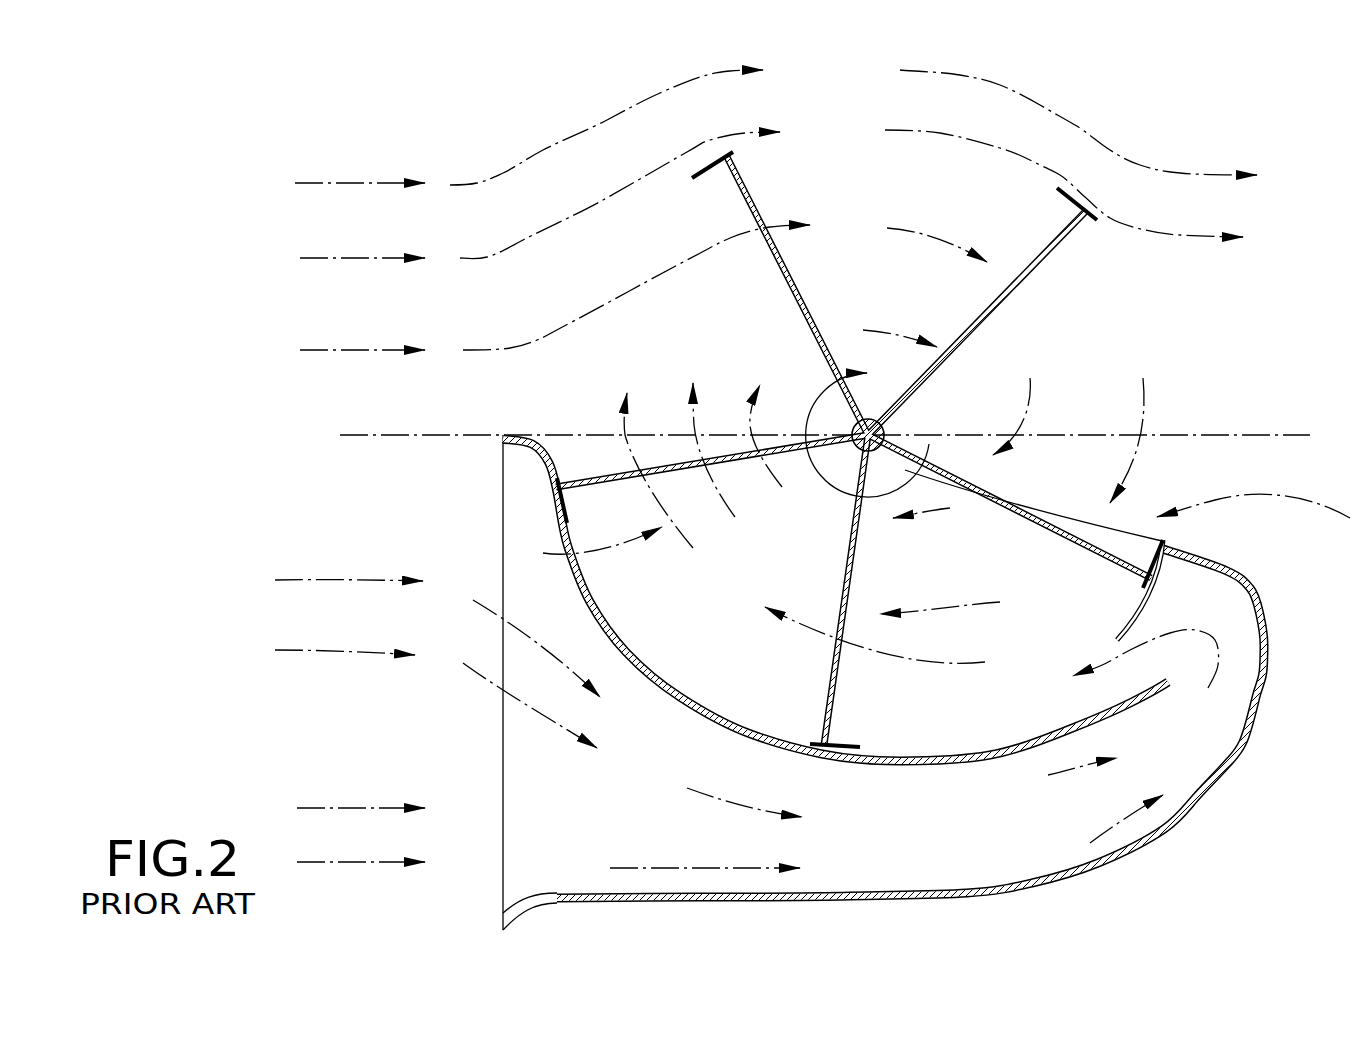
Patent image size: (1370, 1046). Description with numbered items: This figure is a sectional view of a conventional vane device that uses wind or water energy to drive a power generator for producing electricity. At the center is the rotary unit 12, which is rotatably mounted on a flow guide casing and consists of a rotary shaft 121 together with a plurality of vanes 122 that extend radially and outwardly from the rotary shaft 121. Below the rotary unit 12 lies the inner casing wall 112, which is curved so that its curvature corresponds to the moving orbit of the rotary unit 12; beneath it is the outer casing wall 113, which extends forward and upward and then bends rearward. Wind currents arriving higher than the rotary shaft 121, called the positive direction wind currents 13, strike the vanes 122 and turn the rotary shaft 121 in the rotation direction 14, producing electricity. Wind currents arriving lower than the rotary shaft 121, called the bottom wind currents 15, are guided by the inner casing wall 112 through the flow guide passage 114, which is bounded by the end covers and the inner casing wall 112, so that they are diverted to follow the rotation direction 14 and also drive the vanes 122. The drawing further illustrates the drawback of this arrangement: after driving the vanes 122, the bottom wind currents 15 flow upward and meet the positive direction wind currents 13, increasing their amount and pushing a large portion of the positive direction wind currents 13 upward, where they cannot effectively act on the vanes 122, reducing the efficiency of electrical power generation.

The rotary unit 12 is at (866, 449).
The rotary shaft 121 is at (872, 431).
The vanes 122 is at (793, 284).
The positive direction wind currents 13 is at (358, 183).
The rotation direction 14 is at (897, 483).
The bottom wind currents 15 is at (543, 553).
The inner casing wall 112 is at (1133, 708).
The outer casing wall 113 is at (1232, 768).
The flow guide passage 114 is at (1027, 843).